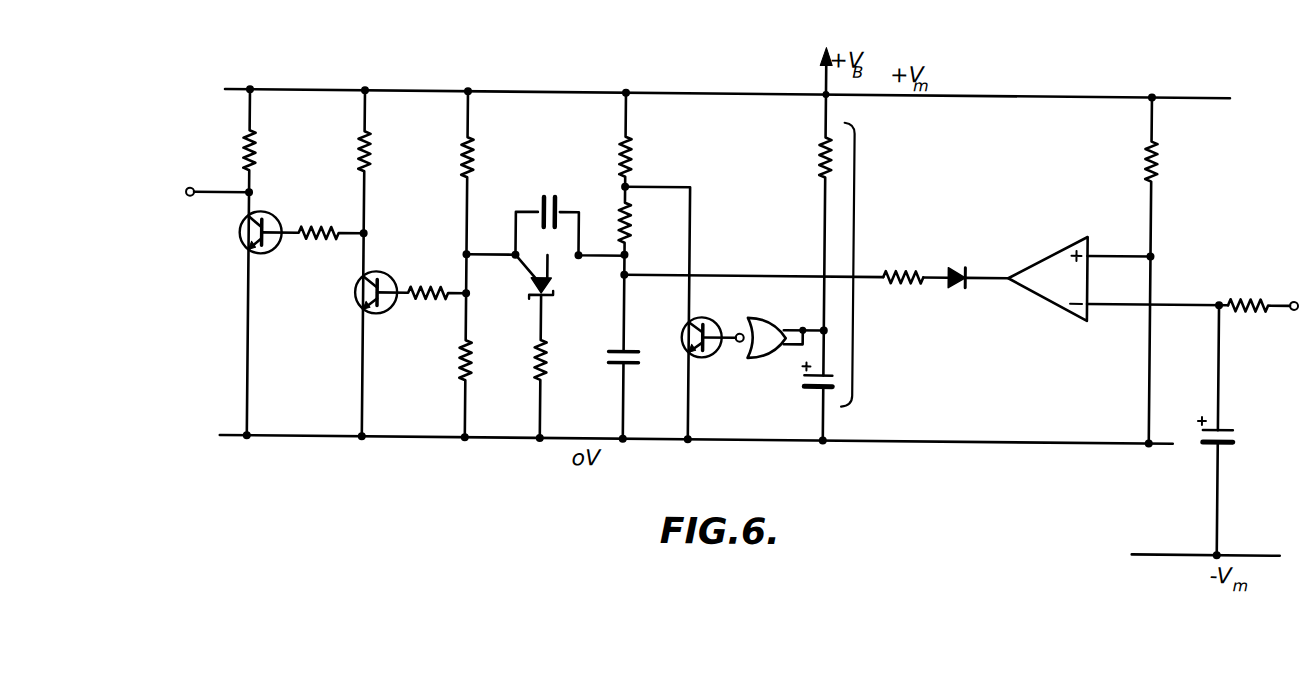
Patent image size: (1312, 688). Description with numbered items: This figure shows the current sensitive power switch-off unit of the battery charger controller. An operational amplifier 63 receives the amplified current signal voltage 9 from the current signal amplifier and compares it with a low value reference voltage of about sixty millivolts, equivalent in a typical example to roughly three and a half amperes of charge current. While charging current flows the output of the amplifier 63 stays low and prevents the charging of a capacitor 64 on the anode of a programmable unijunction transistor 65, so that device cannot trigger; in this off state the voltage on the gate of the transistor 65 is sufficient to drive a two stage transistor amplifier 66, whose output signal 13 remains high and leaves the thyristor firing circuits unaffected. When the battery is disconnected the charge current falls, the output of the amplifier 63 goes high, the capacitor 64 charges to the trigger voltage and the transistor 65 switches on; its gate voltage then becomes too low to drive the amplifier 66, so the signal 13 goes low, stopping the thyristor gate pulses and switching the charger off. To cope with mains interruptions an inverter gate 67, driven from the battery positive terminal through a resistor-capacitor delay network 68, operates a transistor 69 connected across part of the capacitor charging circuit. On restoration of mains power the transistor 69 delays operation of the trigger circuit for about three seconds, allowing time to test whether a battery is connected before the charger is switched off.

The two stage transistor amplifier 66 is at (326, 80).
The signal 13 is at (188, 197).
The programmable unijunction transistor 65 is at (535, 285).
The capacitor 64 is at (632, 349).
The transistor 69 is at (712, 318).
The inverter gate 67 is at (757, 351).
The resistor-capacitor delay network 68 is at (857, 269).
The operational amplifier 63 is at (1043, 268).
The output voltage signal 9 is at (1301, 300).